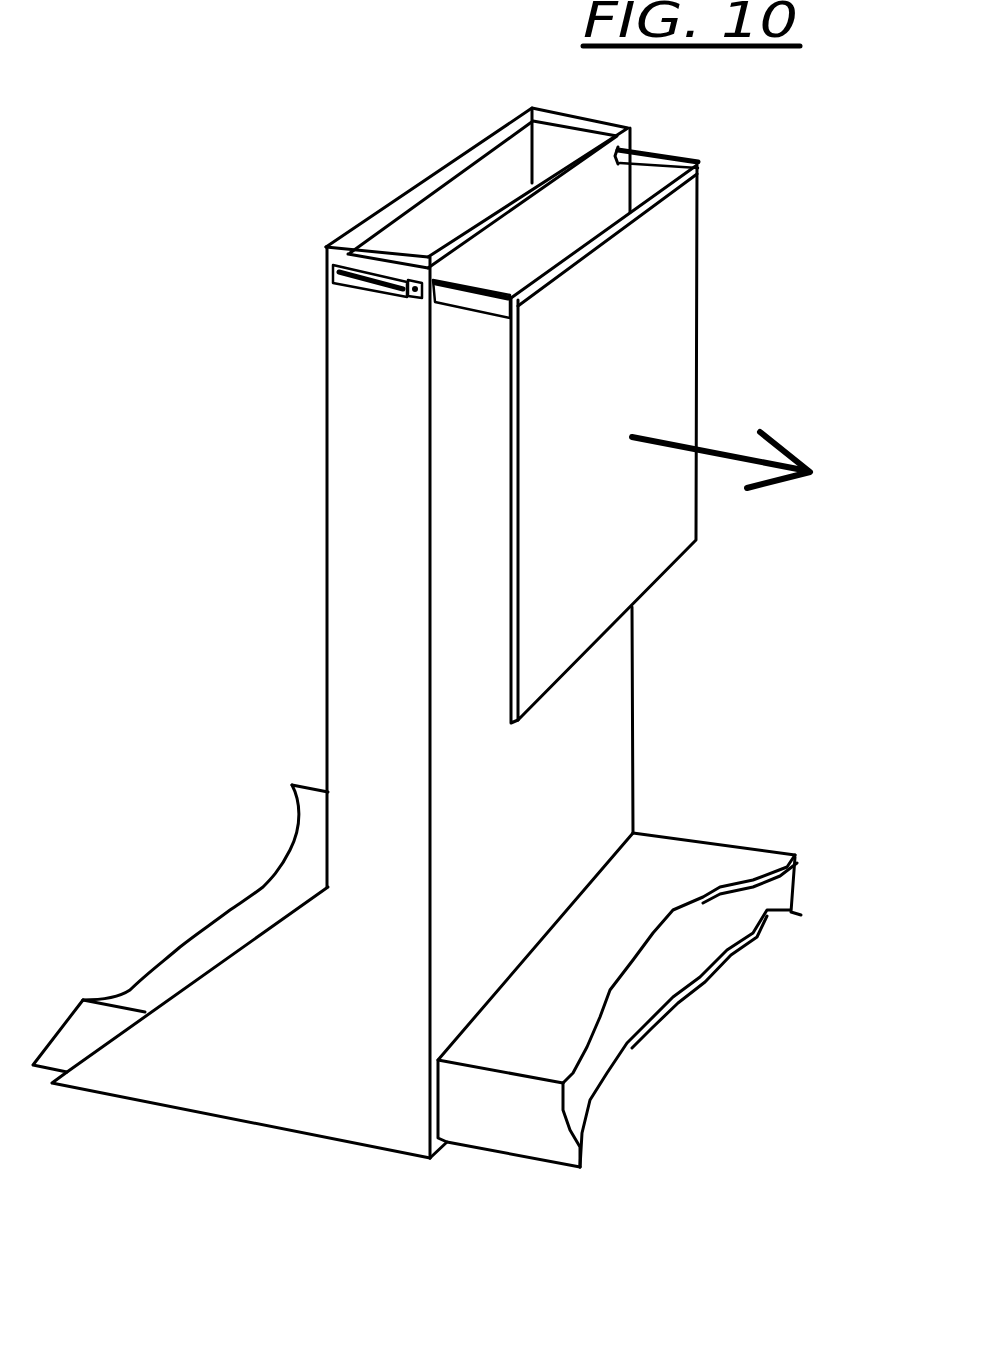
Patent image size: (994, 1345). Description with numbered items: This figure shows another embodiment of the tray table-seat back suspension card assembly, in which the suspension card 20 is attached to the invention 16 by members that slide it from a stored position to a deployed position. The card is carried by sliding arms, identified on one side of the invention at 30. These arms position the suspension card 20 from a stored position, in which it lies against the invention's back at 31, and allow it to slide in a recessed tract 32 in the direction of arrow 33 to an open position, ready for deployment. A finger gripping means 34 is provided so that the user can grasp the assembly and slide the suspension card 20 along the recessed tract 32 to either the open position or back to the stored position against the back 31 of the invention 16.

The upright support column 16 is at (388, 550).
The suspension card 20 is at (580, 530).
The sliding arms 30 is at (480, 310).
The invention's back 31 is at (470, 555).
The recessed tract 32 is at (353, 277).
The arrow 33 is at (695, 451).
The finger gripping means 34 is at (417, 287).